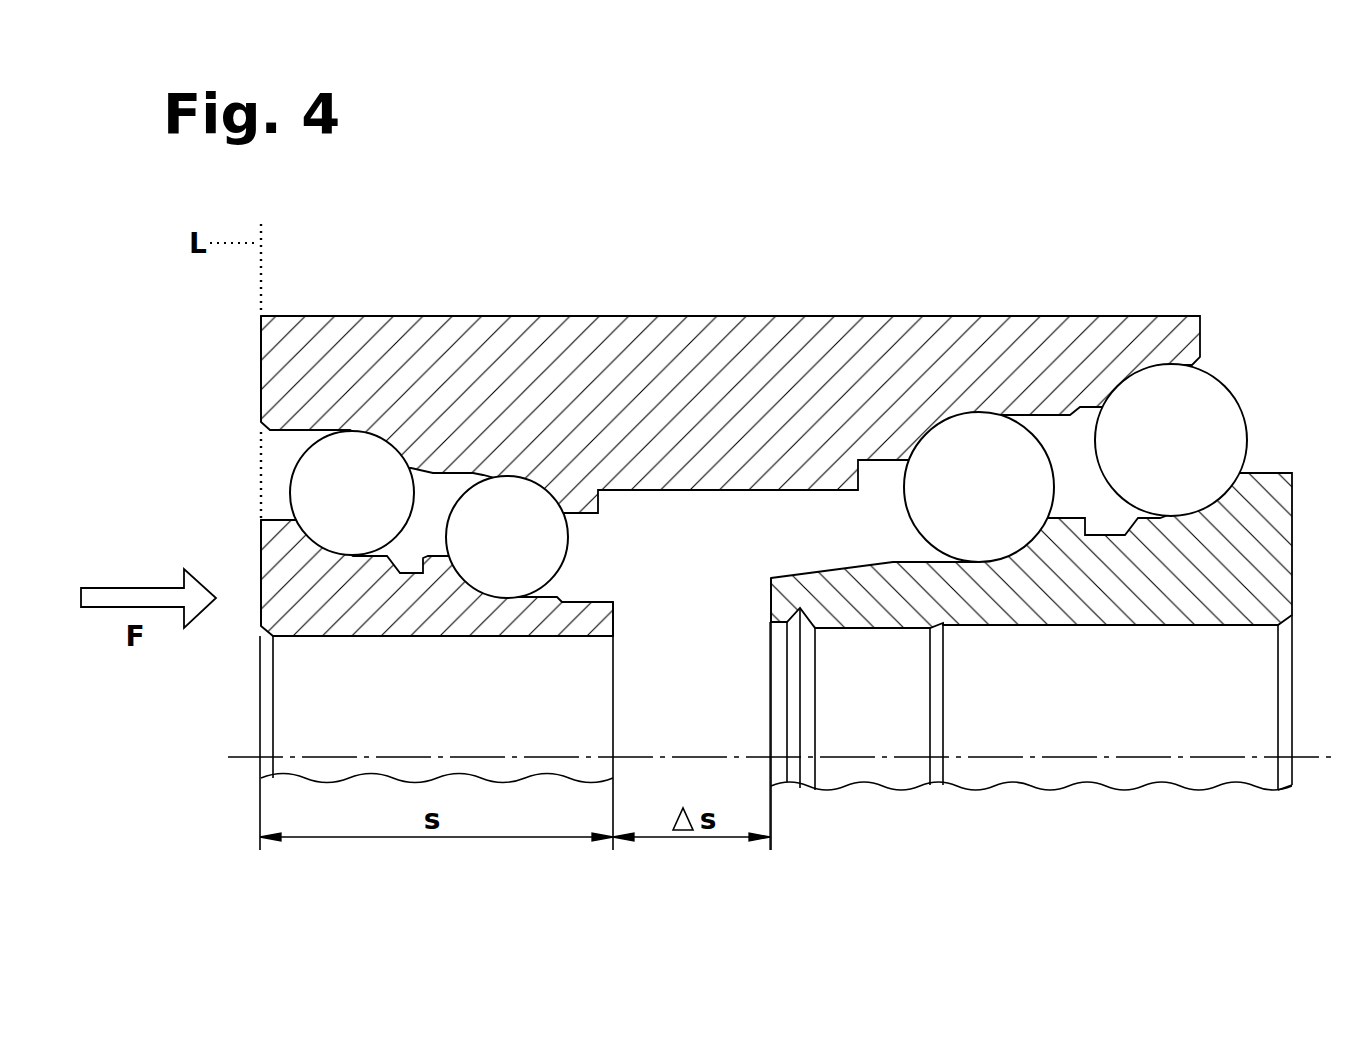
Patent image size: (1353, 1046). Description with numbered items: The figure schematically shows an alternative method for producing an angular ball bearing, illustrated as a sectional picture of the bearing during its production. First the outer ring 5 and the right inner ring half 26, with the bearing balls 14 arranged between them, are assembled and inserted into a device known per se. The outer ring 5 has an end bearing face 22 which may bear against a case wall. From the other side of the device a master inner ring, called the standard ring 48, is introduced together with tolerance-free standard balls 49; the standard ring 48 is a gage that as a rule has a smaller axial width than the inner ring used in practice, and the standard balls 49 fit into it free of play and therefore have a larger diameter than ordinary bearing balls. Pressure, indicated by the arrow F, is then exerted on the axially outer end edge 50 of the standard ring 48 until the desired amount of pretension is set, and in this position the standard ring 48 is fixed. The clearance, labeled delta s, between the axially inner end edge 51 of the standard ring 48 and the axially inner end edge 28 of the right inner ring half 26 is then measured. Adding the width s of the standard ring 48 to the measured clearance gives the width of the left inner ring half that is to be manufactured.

The outer ring 5 is at (733, 380).
The bearing balls 14 is at (961, 508).
The bearing face 22 is at (259, 369).
The inner ring half 26 is at (1098, 608).
The axially inner end edge 28 is at (768, 602).
The standard ring 48 is at (398, 605).
The standard balls 49 is at (335, 510).
The axially outer end edge 50 is at (259, 545).
The axially inner end edge 51 is at (617, 620).